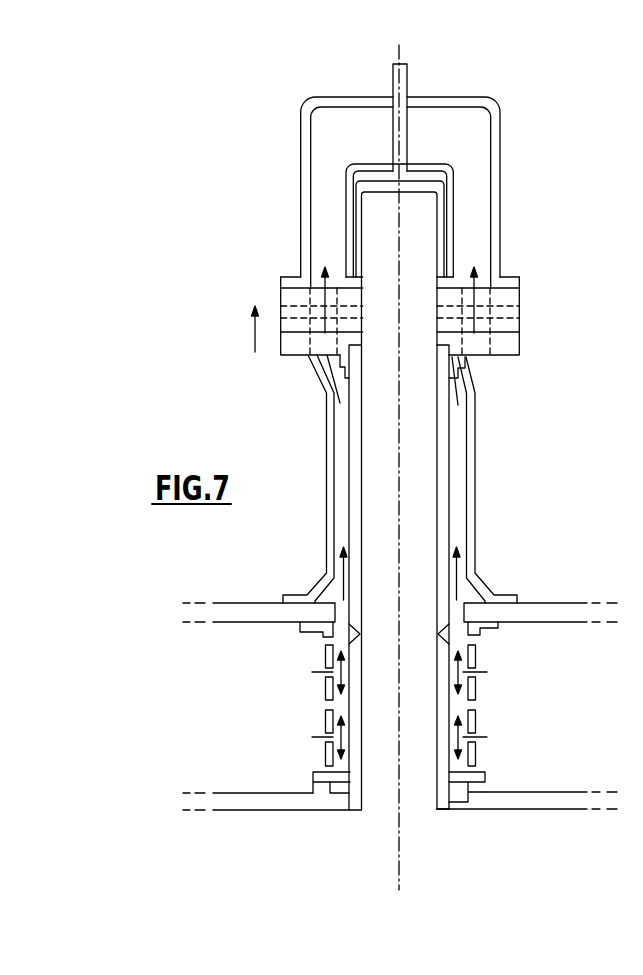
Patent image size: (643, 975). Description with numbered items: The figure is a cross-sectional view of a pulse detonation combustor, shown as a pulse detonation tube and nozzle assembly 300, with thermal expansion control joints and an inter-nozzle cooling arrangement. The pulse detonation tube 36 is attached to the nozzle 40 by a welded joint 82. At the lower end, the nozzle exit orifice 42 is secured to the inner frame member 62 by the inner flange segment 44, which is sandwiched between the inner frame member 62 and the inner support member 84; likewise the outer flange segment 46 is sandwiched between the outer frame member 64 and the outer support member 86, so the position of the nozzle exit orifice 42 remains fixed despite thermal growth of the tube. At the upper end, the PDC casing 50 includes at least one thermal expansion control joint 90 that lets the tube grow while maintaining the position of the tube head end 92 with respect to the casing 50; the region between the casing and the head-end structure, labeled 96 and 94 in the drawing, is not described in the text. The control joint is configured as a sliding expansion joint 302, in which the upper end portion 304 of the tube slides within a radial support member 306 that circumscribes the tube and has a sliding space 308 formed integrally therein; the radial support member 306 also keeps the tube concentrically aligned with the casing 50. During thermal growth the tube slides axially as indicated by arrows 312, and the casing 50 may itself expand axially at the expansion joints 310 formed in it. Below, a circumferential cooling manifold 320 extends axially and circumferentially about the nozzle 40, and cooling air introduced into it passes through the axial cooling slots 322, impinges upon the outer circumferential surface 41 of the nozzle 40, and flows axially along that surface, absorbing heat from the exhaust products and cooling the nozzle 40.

The pulse detonation tube and nozzle assembly 300 is at (207, 125).
The first passage 96 is at (326, 178).
The tube head end 92 is at (470, 168).
The inner tube 94 is at (454, 204).
The pulse detonation tube 36 is at (450, 478).
The expansion joints 310 is at (508, 297).
The sliding space 308 is at (360, 347).
The sliding expansion joint 302 is at (455, 348).
The radial support member 306 is at (452, 358).
The upper end portion 304 is at (460, 372).
The arrows 312 is at (255, 348).
The thermal expansion control joint 90 is at (332, 372).
The PDC casing 50 is at (326, 503).
The welded joint 82 is at (438, 634).
The nozzle 40 is at (438, 707).
The axial cooling slots 322 is at (323, 705).
The outer circumferential surface 41 is at (452, 645).
The circumferential cooling manifold 320 is at (548, 675).
The outer support member 86 is at (317, 772).
The outer flange segment 46 is at (350, 790).
The outer frame member 64 is at (313, 800).
The inner support member 84 is at (478, 772).
The inner flange segment 44 is at (485, 790).
The inner frame member 62 is at (525, 810).
The nozzle exit orifice 42 is at (441, 810).